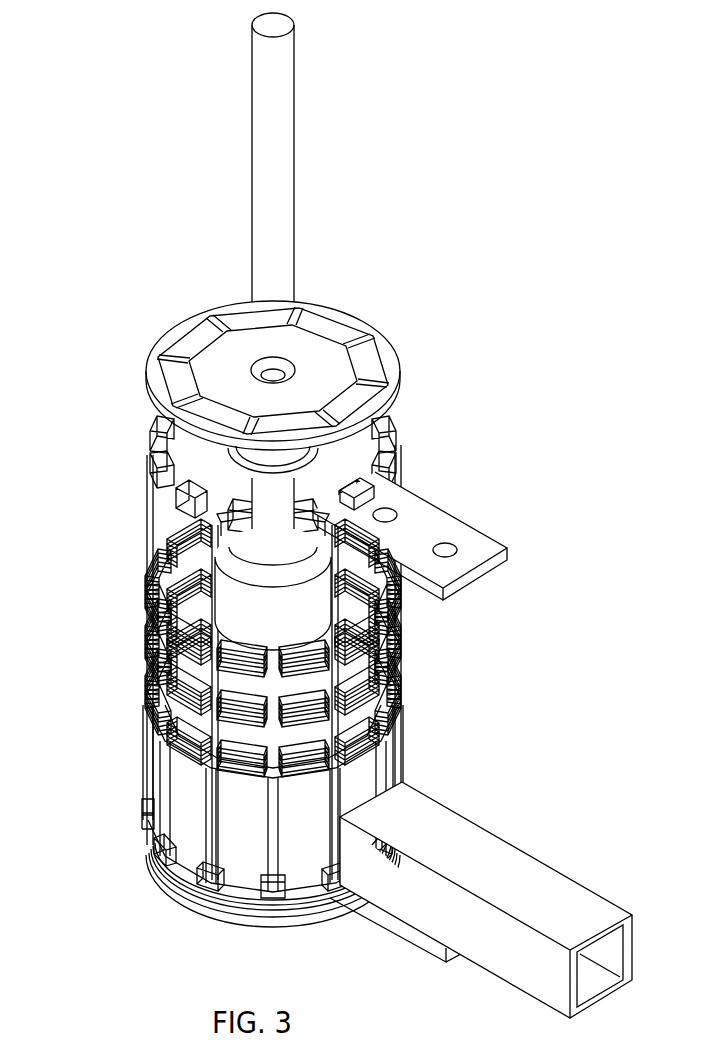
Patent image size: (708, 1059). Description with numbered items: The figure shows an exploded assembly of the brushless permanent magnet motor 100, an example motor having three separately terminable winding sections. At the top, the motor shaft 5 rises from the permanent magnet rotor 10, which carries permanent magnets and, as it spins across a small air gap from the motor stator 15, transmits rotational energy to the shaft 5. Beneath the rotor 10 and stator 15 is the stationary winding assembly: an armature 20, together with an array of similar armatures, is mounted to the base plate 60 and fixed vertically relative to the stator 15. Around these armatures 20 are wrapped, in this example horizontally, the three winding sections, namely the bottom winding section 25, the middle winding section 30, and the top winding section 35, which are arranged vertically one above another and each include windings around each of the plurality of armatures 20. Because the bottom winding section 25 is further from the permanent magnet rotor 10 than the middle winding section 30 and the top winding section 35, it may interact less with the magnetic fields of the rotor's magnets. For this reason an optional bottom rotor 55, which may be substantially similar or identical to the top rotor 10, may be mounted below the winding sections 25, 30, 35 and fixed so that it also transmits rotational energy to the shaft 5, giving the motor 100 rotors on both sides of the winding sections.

The motor shaft 5 is at (281, 105).
The permanent magnet rotor 10 is at (316, 366).
The motor stator 15 is at (347, 478).
The motor armature 20 is at (186, 820).
The bottom winding section 25 is at (150, 712).
The middle winding section 30 is at (147, 660).
The top winding section 35 is at (150, 580).
The bottom rotor 55 is at (176, 897).
The base plate 60 is at (278, 892).
The brushless permanent magnet motor 100 is at (397, 145).